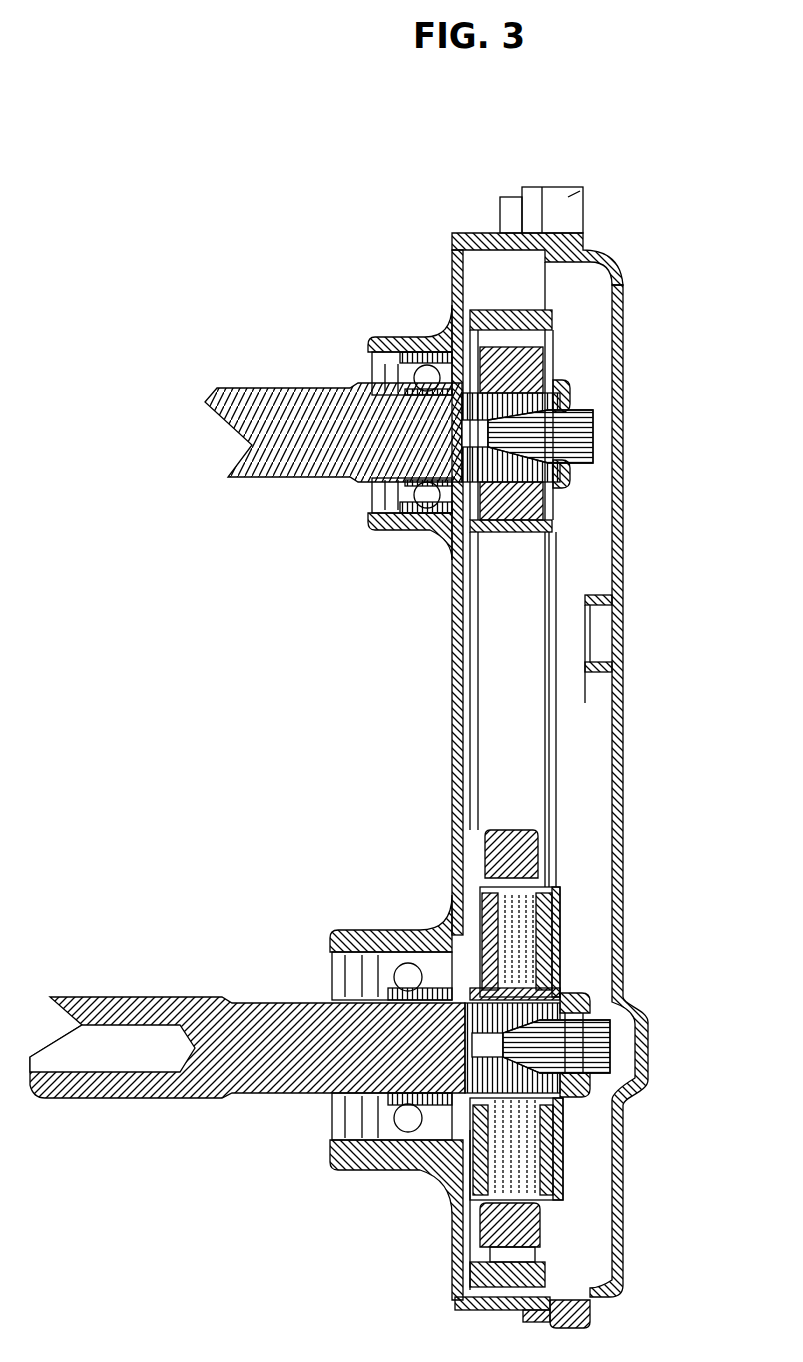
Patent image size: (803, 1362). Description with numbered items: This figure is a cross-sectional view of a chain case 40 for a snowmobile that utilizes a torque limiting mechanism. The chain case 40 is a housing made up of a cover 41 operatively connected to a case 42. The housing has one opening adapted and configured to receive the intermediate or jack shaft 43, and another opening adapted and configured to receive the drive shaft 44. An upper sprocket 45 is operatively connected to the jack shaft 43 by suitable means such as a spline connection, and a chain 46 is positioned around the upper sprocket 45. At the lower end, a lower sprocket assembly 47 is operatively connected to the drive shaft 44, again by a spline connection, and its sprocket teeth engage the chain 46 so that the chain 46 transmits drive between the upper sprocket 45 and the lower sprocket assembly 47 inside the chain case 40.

The chain case 40 is at (625, 398).
The cover 41 is at (625, 482).
The case 42 is at (452, 753).
The jack shaft 43 is at (300, 388).
The drive shaft 44 is at (297, 1000).
The upper sprocket 45 is at (550, 357).
The chain 46 is at (556, 772).
The lower sprocket assembly 47 is at (543, 855).